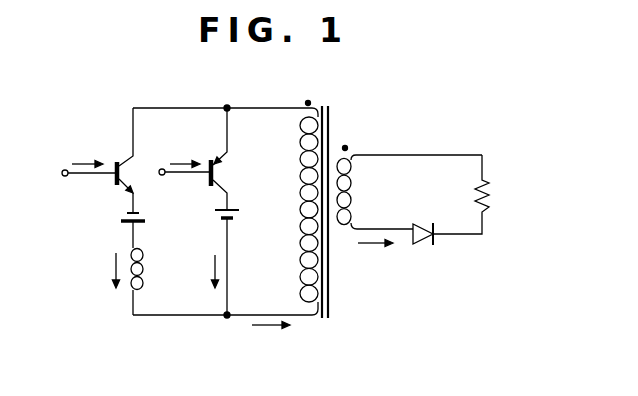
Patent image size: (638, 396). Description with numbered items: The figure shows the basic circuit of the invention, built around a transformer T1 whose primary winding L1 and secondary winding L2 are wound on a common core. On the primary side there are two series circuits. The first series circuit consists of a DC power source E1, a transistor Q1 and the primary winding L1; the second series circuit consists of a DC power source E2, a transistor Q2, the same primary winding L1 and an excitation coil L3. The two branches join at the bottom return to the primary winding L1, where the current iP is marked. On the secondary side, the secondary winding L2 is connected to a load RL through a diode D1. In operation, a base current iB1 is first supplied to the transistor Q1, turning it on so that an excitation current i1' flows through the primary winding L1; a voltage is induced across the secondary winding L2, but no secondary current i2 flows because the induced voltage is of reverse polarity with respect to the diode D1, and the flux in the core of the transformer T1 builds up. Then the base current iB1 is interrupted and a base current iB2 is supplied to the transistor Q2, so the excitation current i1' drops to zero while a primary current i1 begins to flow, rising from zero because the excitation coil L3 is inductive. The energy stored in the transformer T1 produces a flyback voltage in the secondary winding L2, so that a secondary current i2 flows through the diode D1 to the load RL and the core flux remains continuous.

The transistor Q1 is at (202, 159).
The transistor Q2 is at (97, 160).
The DC power source E1 is at (236, 259).
The DC power source E2 is at (119, 228).
The primary winding L1 is at (298, 209).
The secondary winding L2 is at (409, 192).
The excitation coil L3 is at (145, 282).
The transformer T1 is at (327, 104).
The load RL is at (470, 194).
The diode D1 is at (422, 249).
The base current iB1 is at (185, 155).
The base current iB2 is at (87, 155).
The primary current i1 is at (105, 270).
The excitation current i1' is at (206, 270).
The primary current iP is at (271, 337).
The secondary current i2 is at (375, 256).